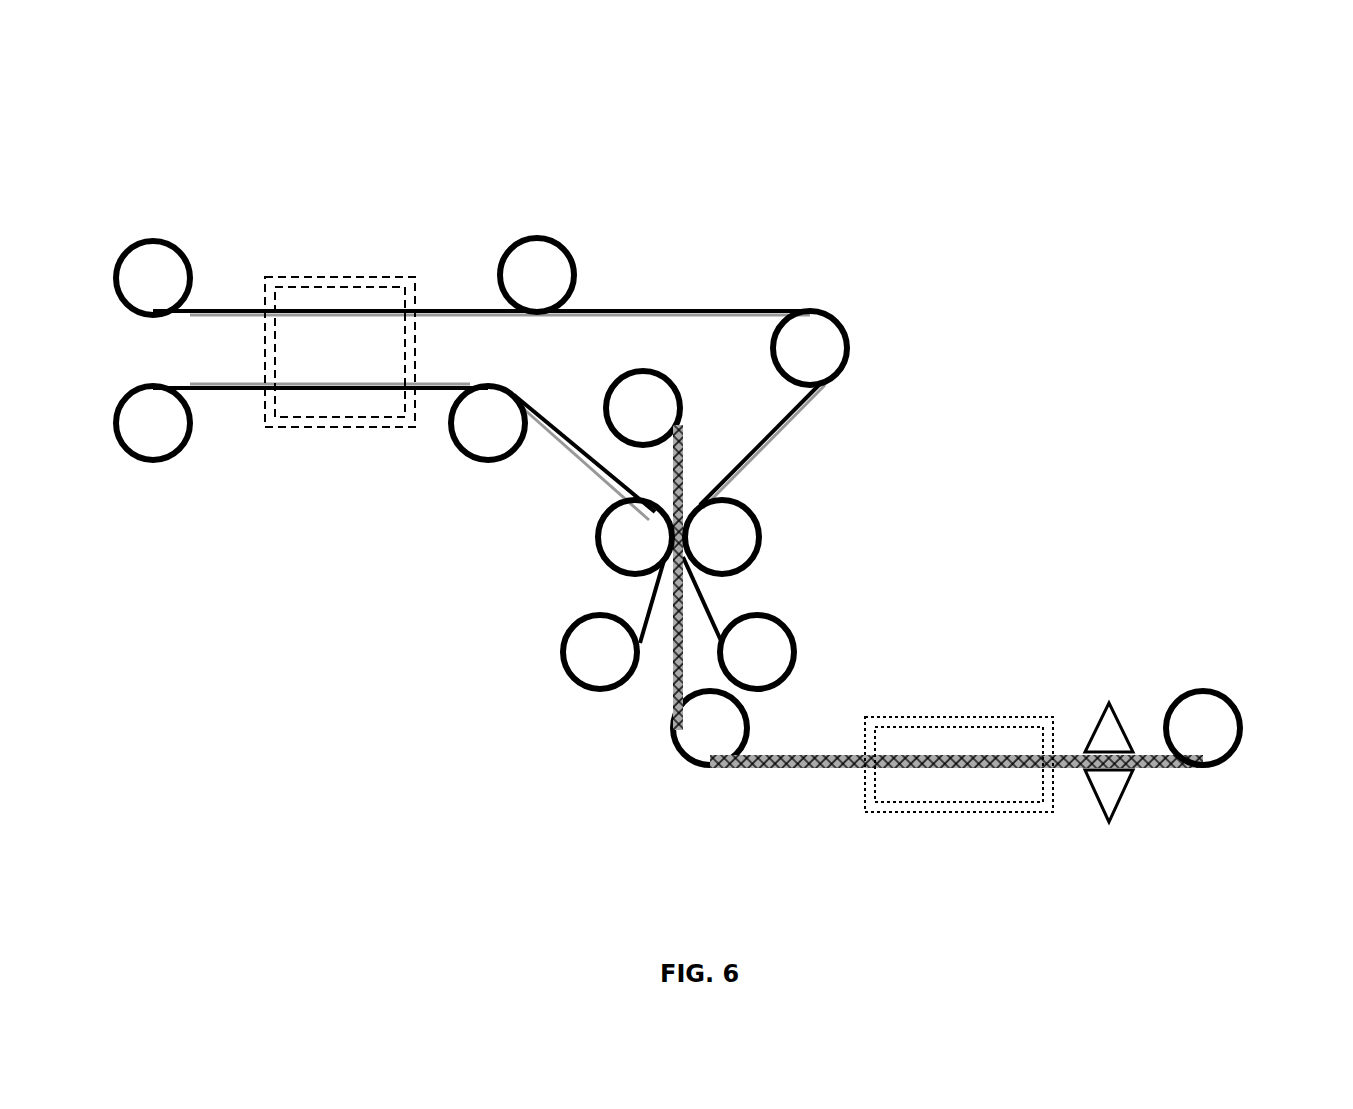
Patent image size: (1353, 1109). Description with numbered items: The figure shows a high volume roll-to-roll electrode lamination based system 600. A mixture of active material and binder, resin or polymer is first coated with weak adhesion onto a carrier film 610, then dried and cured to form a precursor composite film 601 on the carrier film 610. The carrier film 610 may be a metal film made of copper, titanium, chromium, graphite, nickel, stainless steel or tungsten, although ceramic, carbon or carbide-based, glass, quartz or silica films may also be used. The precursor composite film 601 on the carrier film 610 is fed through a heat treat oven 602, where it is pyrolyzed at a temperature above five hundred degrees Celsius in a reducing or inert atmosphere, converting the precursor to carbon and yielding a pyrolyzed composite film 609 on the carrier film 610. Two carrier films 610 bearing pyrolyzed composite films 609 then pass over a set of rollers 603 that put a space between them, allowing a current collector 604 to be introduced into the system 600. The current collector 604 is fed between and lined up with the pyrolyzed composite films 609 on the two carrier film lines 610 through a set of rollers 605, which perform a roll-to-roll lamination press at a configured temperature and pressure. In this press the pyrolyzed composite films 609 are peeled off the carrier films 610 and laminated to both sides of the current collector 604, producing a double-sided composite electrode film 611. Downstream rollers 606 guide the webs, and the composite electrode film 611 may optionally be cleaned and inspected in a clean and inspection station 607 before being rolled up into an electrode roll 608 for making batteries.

The system 600 is at (237, 136).
The precursor composite film 601 is at (187, 323).
The heat treat oven 602 is at (330, 277).
The rollers 603 is at (568, 246).
The current collector 604 is at (686, 447).
The rollers 605 is at (592, 525).
The exit rollers 606 is at (566, 677).
The clean and inspection station 607 is at (958, 717).
The electrode roll 608 is at (1238, 758).
The pyrolyzed composite film 609 is at (462, 322).
The carrier film 610 is at (222, 302).
The double-sided composite electrode film 611 is at (800, 772).